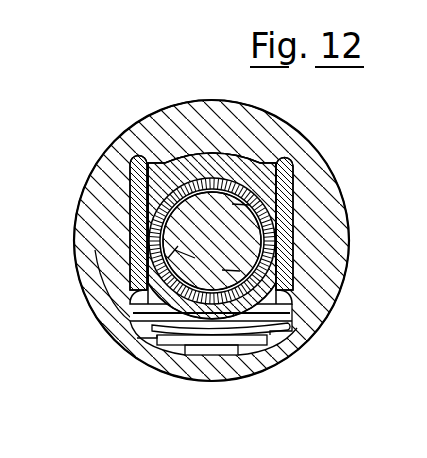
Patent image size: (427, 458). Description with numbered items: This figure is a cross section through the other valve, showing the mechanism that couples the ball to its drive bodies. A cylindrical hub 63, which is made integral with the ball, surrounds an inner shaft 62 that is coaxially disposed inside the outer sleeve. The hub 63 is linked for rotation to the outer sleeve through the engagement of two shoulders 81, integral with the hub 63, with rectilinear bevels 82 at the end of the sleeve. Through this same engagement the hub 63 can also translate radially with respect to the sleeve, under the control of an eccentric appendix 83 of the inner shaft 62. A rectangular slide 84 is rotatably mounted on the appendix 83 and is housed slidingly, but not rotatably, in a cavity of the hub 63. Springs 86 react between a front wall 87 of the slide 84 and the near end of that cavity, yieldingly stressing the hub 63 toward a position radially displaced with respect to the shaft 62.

The inner shaft 62 is at (262, 237).
The cylindrical hub 63 is at (205, 135).
The shoulders 81 is at (130, 189).
The rectilinear bevels 82 is at (148, 272).
The eccentric appendix 83 is at (134, 278).
The rectangular slide 84 is at (171, 165).
The springs 86 is at (297, 332).
The front wall 87 is at (137, 317).